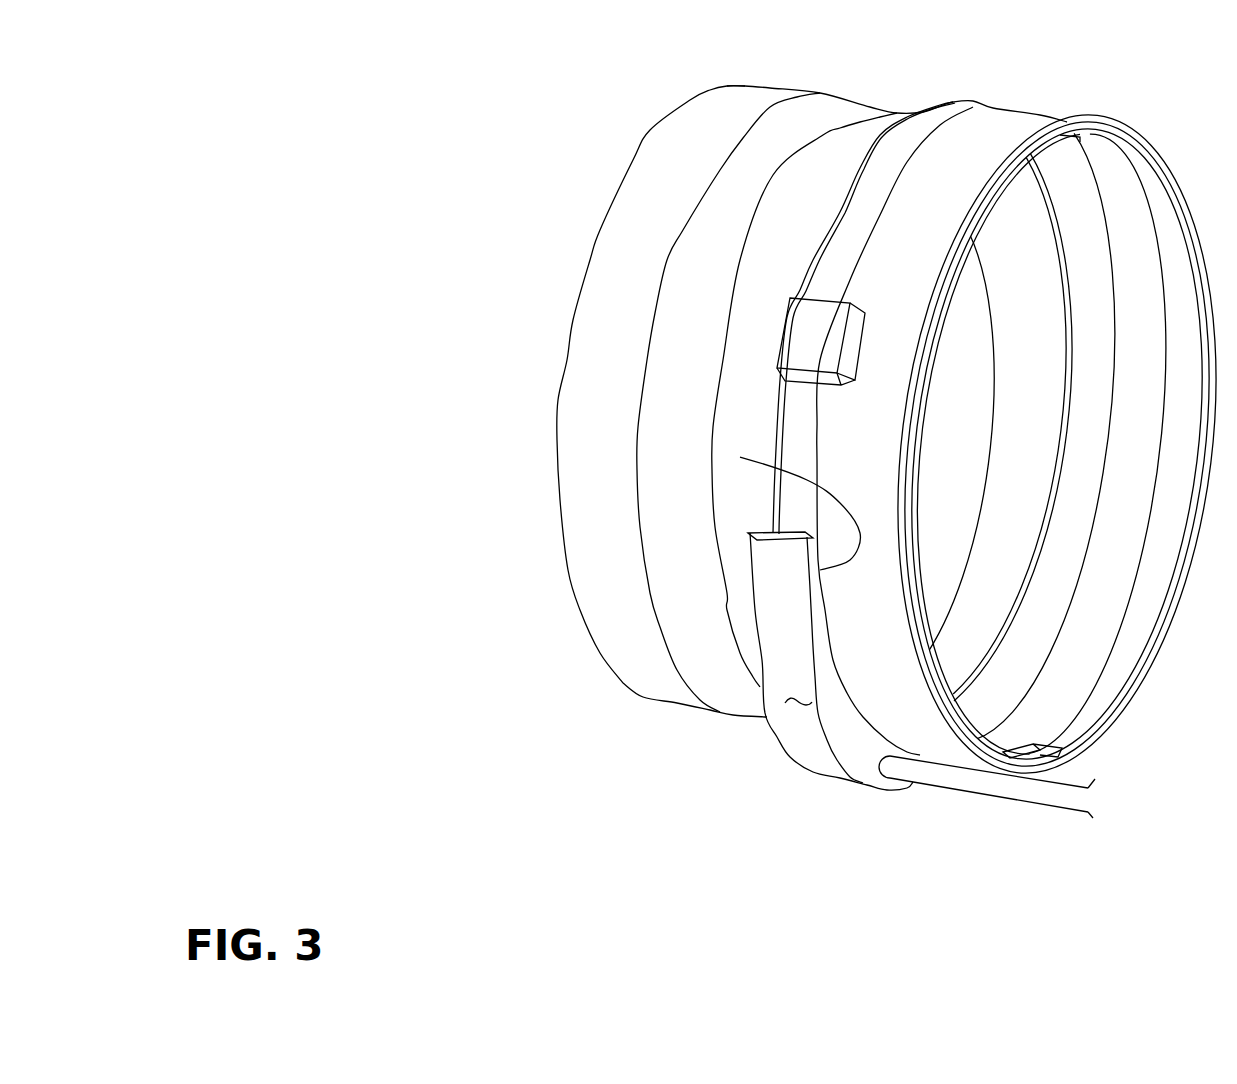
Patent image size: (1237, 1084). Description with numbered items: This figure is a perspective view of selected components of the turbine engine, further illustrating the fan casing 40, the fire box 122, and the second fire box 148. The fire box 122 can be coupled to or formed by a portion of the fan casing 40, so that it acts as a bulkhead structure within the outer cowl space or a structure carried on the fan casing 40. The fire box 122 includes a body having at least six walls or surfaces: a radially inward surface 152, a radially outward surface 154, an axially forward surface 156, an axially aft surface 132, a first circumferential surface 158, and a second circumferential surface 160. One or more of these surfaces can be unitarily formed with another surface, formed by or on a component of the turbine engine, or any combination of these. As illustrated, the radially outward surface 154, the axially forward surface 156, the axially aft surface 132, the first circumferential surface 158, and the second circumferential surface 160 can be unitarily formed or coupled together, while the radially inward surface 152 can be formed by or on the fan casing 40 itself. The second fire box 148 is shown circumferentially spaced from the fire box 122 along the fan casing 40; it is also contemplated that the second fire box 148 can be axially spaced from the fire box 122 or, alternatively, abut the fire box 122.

The fan casing 40 is at (770, 88).
The second fire box 148 is at (787, 323).
The radially inward surface 152 is at (740, 457).
The first circumferential surface 158 is at (780, 533).
The fire box 122 is at (741, 551).
The axially forward surface 156 is at (755, 576).
The radially outward surface 154 is at (800, 707).
The axially aft surface 132 is at (853, 743).
The second circumferential surface 160 is at (913, 757).